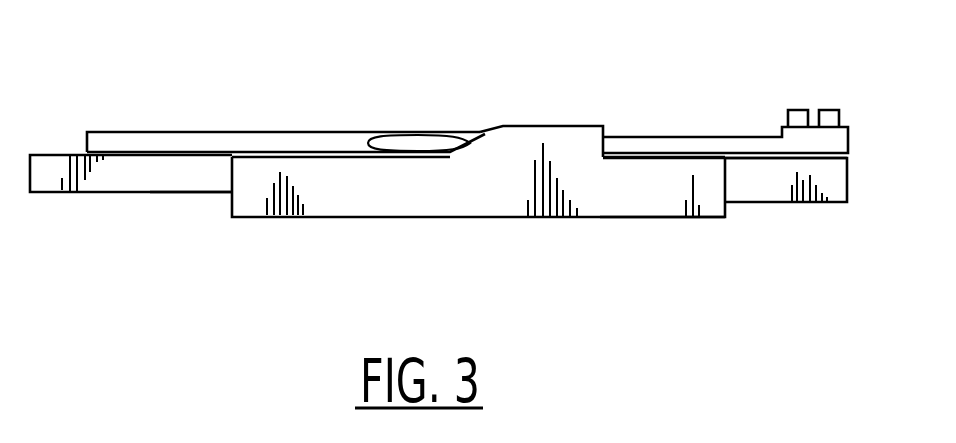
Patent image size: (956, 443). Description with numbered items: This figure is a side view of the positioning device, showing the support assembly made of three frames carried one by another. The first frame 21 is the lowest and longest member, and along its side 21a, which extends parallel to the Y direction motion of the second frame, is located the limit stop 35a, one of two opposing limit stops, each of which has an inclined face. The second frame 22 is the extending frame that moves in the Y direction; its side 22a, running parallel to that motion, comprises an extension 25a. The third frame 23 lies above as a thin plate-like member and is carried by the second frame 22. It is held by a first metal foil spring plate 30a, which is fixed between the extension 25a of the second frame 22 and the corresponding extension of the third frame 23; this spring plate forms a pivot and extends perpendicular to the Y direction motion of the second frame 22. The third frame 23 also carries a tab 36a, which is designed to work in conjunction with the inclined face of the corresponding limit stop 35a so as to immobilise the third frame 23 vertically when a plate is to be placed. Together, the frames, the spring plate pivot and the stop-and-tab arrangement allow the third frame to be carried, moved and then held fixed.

The first frame 21 is at (405, 219).
The side of the first frame 21a is at (588, 218).
The second frame 22 is at (142, 194).
The side of the second frame 22a is at (190, 178).
The third frame 23 is at (233, 132).
The extension 25a is at (812, 202).
The first metal foil spring plate 30a is at (859, 139).
The limit stop 35a is at (573, 125).
The tab 36a is at (418, 136).